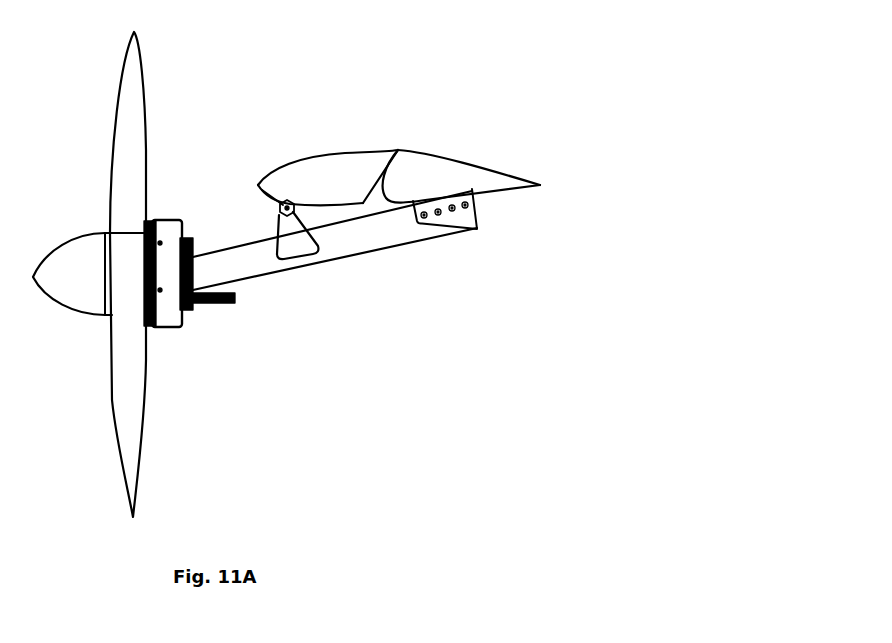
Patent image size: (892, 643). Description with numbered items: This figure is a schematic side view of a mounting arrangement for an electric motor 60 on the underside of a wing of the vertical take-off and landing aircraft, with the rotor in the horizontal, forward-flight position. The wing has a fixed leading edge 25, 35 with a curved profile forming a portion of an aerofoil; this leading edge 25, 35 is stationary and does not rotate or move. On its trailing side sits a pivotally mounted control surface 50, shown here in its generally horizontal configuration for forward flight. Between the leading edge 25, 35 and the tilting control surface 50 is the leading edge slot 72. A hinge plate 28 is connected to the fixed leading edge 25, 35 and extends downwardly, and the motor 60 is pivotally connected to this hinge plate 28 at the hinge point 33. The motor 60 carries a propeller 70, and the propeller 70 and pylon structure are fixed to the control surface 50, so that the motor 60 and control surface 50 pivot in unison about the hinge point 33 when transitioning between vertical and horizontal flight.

The fixed leading edge 25 is at (325, 105).
The fixed leading edge 35 is at (323, 145).
The leading edge slot 72 is at (408, 148).
The control surface 50 is at (542, 127).
The propeller 70 is at (154, 370).
The hinge point 33 is at (290, 234).
The hinge plate 28 is at (312, 262).
The electric motor 60 is at (395, 257).